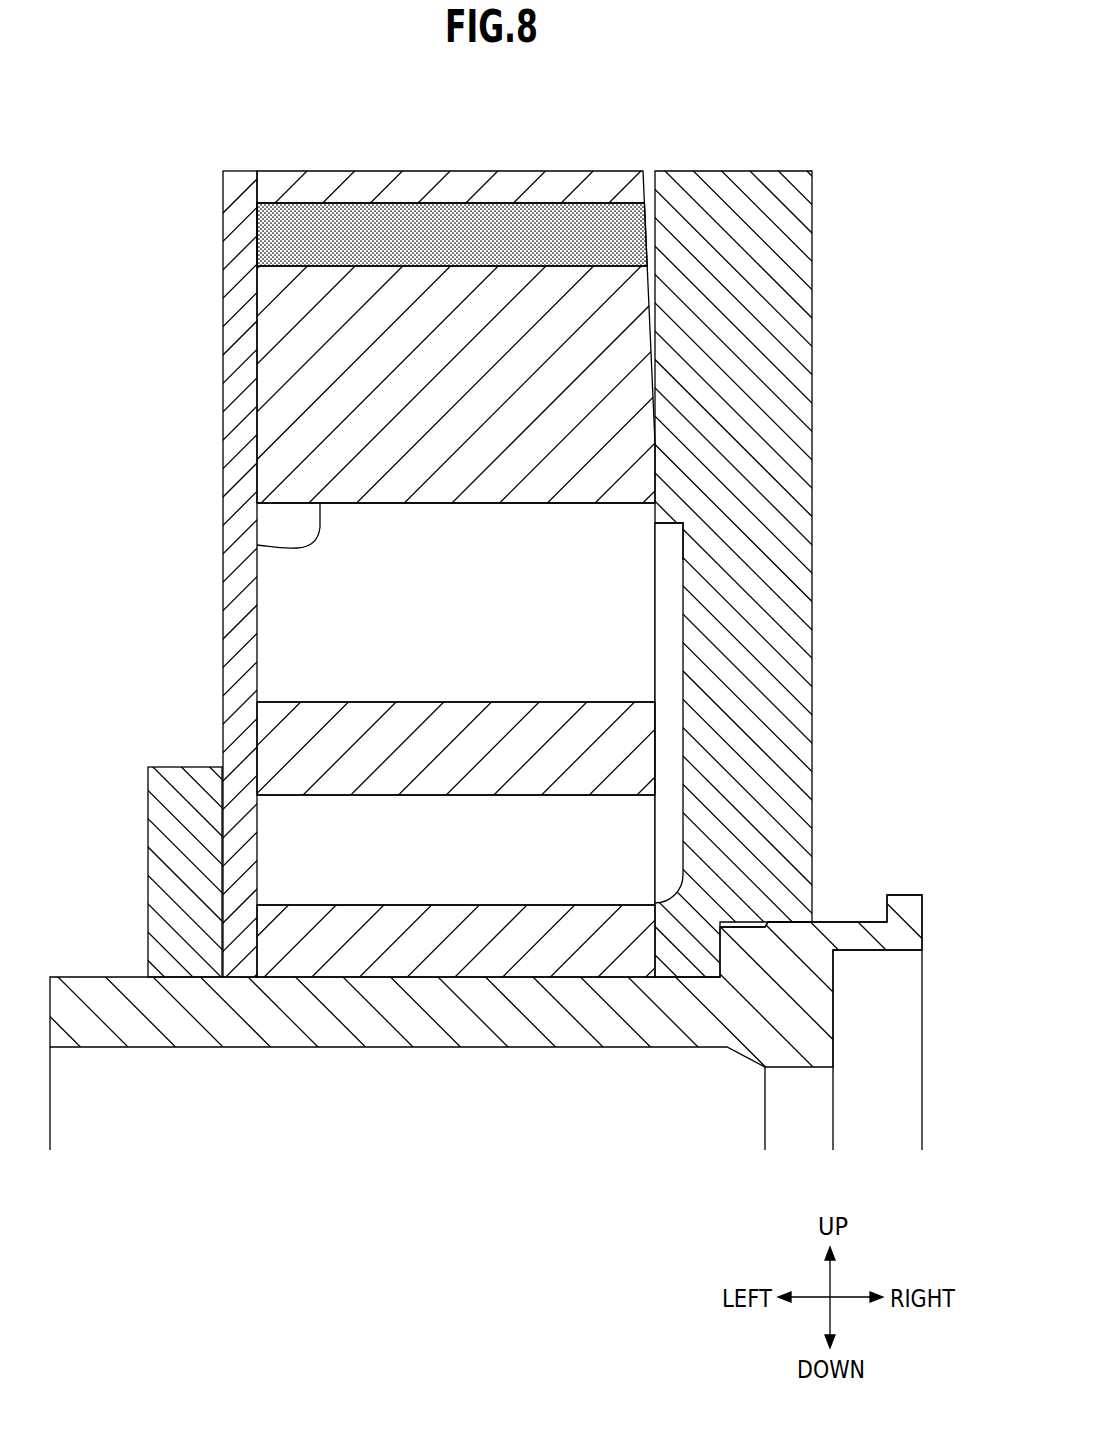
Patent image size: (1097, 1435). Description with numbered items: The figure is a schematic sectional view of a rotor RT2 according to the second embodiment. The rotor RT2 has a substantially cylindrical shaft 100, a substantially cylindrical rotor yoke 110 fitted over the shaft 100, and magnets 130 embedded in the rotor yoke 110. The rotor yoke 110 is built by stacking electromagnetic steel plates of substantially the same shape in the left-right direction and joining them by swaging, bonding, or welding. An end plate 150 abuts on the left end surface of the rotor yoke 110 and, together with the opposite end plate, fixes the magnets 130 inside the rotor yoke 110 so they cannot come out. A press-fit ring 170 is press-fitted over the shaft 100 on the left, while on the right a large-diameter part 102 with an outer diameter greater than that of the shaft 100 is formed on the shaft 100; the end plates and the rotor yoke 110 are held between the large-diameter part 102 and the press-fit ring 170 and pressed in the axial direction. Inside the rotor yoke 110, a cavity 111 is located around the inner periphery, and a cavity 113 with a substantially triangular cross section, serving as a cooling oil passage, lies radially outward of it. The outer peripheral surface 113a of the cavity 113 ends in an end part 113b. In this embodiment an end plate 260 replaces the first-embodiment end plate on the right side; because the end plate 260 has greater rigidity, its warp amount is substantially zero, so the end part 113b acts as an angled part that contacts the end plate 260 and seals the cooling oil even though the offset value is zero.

The shaft 100 is at (90, 997).
The large-diameter part 102 is at (817, 947).
The rotor yoke 110 is at (460, 330).
The cavity 111 is at (620, 857).
The cavity 113 is at (610, 627).
The outer peripheral surface 113a is at (257, 545).
The end part 113b is at (676, 528).
The magnet 130 is at (334, 236).
The end plate 150 is at (242, 183).
The press-fit ring 170 is at (155, 846).
The end plate 260 is at (790, 300).
The rotor RT2 is at (733, 78).